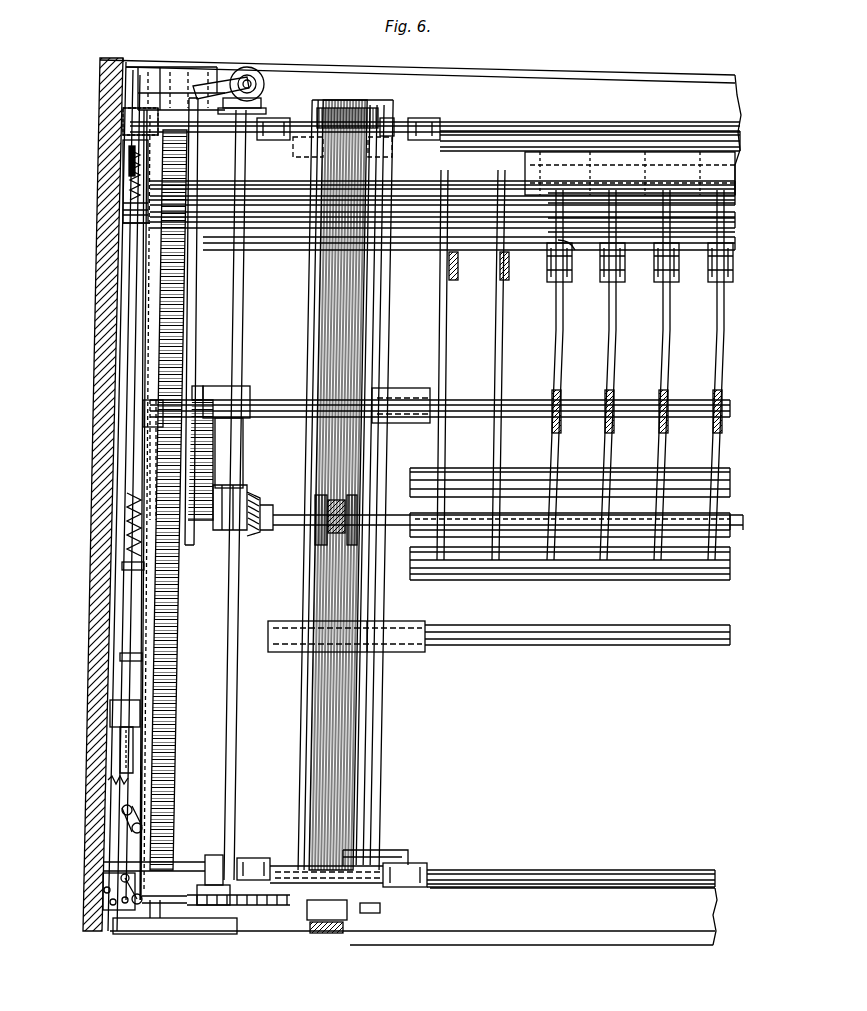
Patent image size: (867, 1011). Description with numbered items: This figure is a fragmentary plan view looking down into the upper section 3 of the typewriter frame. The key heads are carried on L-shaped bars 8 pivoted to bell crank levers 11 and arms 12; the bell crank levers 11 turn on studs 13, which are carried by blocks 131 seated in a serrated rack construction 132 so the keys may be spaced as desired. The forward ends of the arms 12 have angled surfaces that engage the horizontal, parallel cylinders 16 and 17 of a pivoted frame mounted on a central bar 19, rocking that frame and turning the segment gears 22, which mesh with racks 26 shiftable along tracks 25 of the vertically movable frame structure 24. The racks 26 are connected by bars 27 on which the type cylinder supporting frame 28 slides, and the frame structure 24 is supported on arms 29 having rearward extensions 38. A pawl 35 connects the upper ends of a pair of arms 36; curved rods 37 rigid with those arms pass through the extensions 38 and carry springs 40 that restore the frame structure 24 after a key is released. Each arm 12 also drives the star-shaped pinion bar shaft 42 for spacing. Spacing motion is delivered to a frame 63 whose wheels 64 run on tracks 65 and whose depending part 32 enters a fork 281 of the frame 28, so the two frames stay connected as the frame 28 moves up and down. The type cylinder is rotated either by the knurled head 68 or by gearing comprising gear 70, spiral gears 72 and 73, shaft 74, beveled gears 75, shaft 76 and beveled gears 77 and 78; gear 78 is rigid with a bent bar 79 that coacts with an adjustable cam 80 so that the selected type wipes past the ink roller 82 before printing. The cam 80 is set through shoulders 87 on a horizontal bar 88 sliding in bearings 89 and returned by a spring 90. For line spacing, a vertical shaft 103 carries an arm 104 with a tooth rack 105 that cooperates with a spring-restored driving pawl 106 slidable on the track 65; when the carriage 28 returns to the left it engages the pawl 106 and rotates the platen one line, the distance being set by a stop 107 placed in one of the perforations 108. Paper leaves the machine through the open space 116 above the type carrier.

The upper section of the frame 3 is at (100, 270).
The L-shaped bars 8 is at (498, 270).
The bell crank levers 11 is at (663, 270).
The arms 12 is at (660, 356).
The studs 13 is at (575, 245).
The cylinder 16 is at (575, 581).
The cylinder 17 is at (570, 468).
The central bar 19 is at (736, 516).
The segment gears 22 is at (150, 440).
The vertically movable frame structure 24 is at (156, 68).
The tracks 25 is at (156, 920).
The racks 26 is at (183, 298).
The bars 27 is at (462, 398).
The type cylinder supporting frame 28 is at (395, 388).
The arms 29 is at (198, 340).
The depending part 32 is at (345, 854).
The pawl 35 is at (418, 248).
The arms 36 is at (123, 222).
The curved rods 37 is at (123, 204).
The rearward extensions 38 is at (123, 148).
The springs 40 is at (128, 172).
The pinion bar shaft 42 is at (440, 182).
The frame 63 is at (306, 748).
The wheels 64 is at (292, 114).
The tracks 65 is at (556, 132).
The knurled head 68 is at (325, 934).
The gear 70 is at (378, 118).
The spiral gear 72 is at (338, 500).
The spiral gear 73 is at (322, 545).
The shaft 74 is at (392, 515).
The beveled gears 75 is at (252, 490).
The shaft 76 is at (245, 290).
The beveled gear 77 is at (268, 102).
The beveled gear 78 is at (262, 78).
The bent bar 79 is at (218, 78).
The adjustable cam 80 is at (183, 70).
The ink roller 82 is at (382, 748).
The shoulders 87 is at (122, 568).
The horizontal bar 88 is at (132, 300).
The bearings 89 is at (123, 124).
The spring 90 is at (127, 520).
The vertical shaft 103 is at (121, 878).
The arm 104 is at (113, 910).
The tooth rack 105 is at (268, 906).
The driving pawl 106 is at (196, 856).
The stop 107 is at (105, 892).
The perforations 108 is at (112, 904).
The open space 116 is at (648, 88).
The blocks 131 is at (572, 198).
The rack construction 132 is at (526, 170).
The fork 281 is at (340, 118).